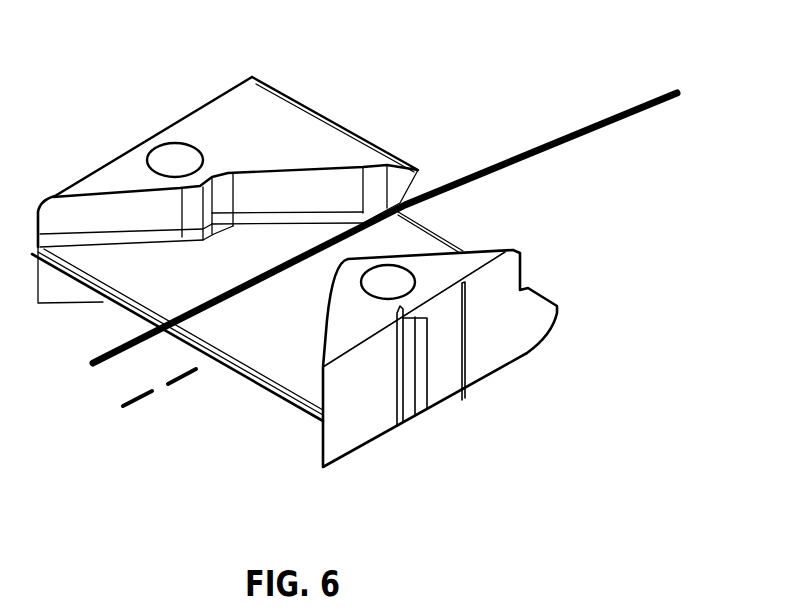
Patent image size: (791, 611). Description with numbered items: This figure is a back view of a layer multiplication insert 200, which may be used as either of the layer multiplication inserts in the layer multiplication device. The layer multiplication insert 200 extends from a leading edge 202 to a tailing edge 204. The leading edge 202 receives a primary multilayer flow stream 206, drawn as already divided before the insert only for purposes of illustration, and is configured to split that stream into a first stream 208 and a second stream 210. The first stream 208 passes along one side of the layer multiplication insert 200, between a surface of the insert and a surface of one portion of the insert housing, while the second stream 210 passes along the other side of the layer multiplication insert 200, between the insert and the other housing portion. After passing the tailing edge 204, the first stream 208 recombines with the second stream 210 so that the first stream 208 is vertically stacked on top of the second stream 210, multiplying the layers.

The layer multiplication insert 200 is at (551, 63).
The leading edge 202 is at (538, 245).
The tailing edge 204 is at (272, 398).
The primary multilayer flow stream 206 is at (630, 114).
The first stream 208 is at (110, 354).
The second stream 210 is at (150, 393).